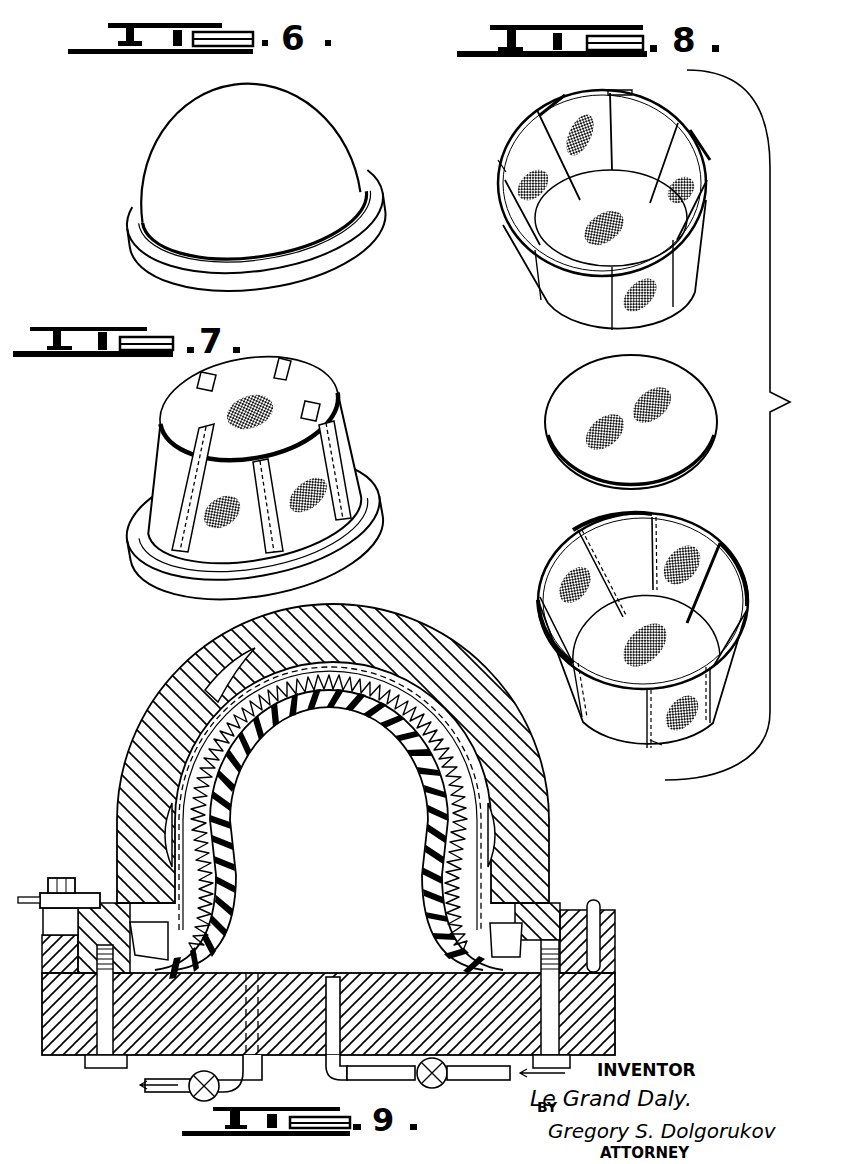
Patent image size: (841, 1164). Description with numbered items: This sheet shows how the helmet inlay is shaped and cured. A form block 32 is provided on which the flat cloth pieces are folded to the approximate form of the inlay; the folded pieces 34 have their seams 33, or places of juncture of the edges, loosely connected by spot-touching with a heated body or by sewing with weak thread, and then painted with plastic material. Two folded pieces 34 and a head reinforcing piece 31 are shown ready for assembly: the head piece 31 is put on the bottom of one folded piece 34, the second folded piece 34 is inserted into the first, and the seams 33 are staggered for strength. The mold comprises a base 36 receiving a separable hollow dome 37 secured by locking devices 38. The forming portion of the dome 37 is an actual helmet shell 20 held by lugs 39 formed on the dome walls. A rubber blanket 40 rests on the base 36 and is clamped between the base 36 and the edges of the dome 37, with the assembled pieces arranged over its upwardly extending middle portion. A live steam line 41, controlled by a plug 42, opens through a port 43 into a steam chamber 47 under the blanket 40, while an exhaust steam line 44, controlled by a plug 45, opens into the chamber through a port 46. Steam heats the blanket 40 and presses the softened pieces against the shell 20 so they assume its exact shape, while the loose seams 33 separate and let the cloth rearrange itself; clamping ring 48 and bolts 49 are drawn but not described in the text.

In FIG. 9, the shell 20 is at (222, 697).
In FIG. 8, the head reinforcing piece 31 is at (547, 437).
In FIG. 9, the head reinforcing piece 31 is at (453, 743).
In FIG. 6, the form block 32 is at (328, 127).
In FIG. 7, the form block 32 is at (145, 562).
In FIG. 7, the seams 33 is at (298, 362).
In FIG. 8, the seams 33 is at (673, 277).
In FIG. 7, the folded pieces 34 is at (337, 410).
In FIG. 8, the folded pieces 34 is at (517, 217).
In FIG. 9, the folded pieces 34 is at (460, 780).
In FIG. 9, the base 36 is at (615, 997).
In FIG. 9, the hollow dome 37 is at (386, 612).
In FIG. 9, the locking devices 38 is at (95, 877).
In FIG. 9, the lugs 39 is at (403, 668).
In FIG. 9, the rubber blanket 40 is at (230, 837).
In FIG. 9, the live steam line 41 is at (520, 1080).
In FIG. 9, the live steam plug 42 is at (418, 1088).
In FIG. 9, the port 43 is at (335, 975).
In FIG. 9, the exhaust steam line 44 is at (191, 1096).
In FIG. 9, the exhaust plug 45 is at (190, 1078).
In FIG. 9, the exhaust port 46 is at (255, 972).
In FIG. 9, the steam chamber 47 is at (382, 818).
In FIG. 9, the clamping ring 48 is at (78, 950).
In FIG. 9, the bolt 49 is at (90, 1062).